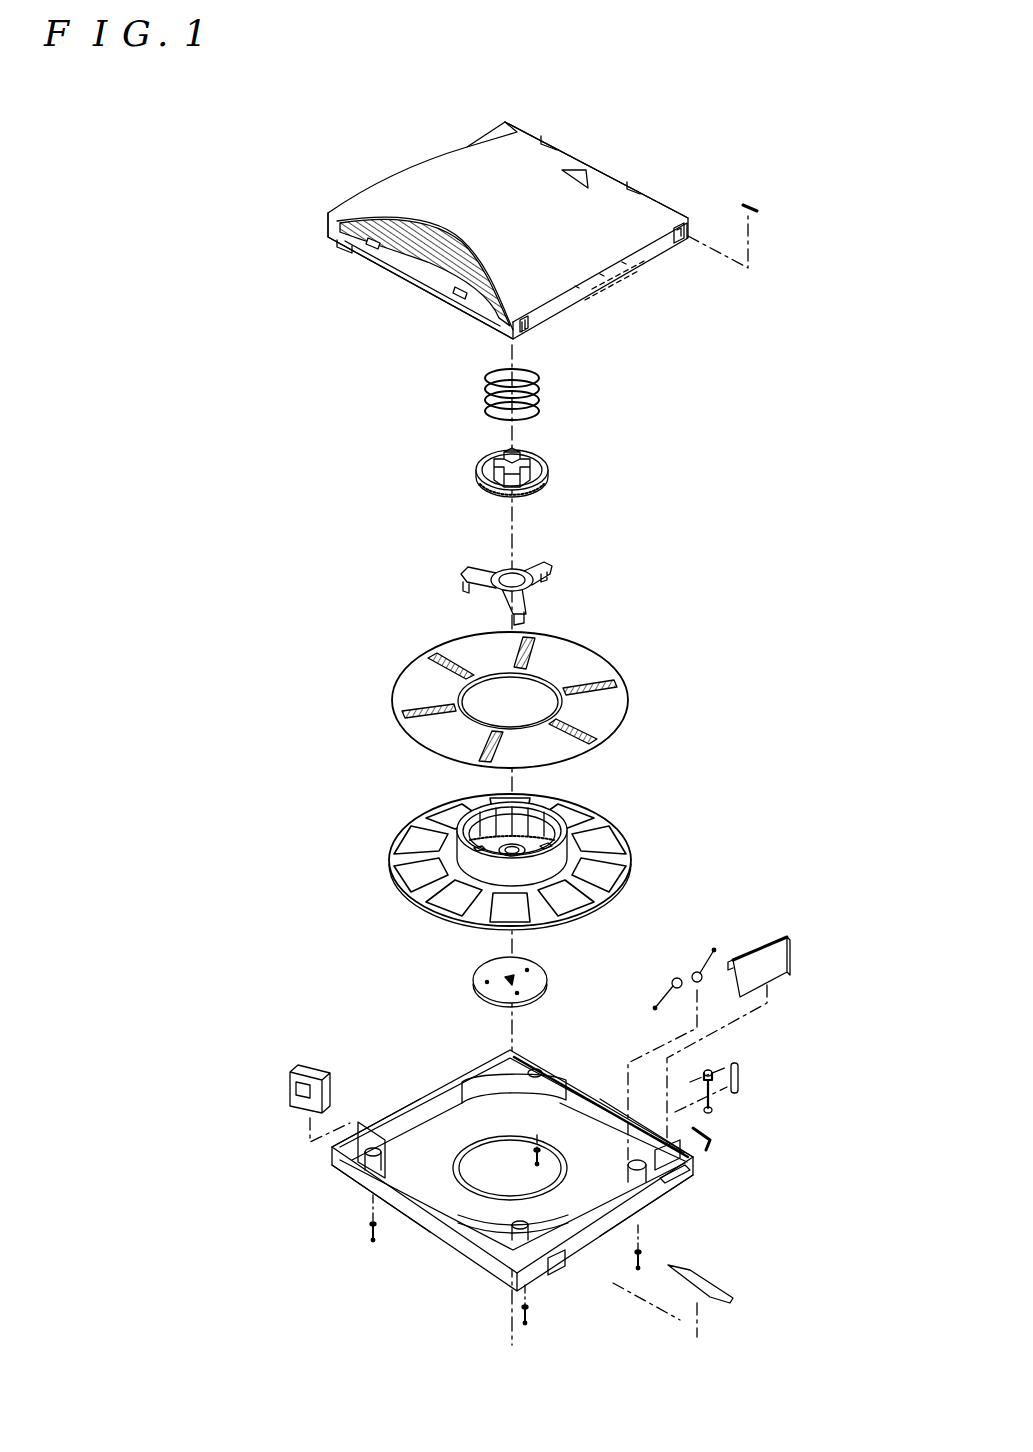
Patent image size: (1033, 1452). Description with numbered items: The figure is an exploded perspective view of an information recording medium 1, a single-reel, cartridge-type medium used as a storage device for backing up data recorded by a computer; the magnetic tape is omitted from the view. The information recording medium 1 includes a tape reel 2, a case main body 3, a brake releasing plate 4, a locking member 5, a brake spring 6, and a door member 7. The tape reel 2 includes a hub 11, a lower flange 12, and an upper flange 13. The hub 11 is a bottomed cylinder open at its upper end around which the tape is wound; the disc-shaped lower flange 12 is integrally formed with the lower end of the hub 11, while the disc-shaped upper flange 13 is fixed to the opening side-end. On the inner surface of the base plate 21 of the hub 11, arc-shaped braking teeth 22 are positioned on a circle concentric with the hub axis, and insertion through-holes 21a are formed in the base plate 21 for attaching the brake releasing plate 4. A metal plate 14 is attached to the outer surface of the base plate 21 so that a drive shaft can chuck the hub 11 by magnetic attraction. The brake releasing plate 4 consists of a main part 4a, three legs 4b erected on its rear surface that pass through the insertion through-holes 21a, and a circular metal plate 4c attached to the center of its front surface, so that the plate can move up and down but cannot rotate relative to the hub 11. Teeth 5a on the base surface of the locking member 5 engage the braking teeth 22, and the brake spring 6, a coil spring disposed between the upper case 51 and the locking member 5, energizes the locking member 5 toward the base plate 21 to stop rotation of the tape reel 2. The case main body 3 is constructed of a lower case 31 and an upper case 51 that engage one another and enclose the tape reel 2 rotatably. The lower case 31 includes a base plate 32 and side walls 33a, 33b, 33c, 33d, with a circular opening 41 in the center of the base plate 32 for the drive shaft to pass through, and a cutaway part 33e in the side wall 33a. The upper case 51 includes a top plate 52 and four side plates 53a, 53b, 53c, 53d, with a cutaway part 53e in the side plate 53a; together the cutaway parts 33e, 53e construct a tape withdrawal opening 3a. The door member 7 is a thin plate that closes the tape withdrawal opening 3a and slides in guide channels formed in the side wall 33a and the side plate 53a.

The information recording medium 1 is at (470, 117).
The tape reel 2 is at (369, 632).
The case main body 3 is at (358, 1082).
The tape withdrawal opening 3a is at (723, 730).
The brake releasing plate 4 is at (490, 565).
The main part 4a is at (550, 570).
The legs 4b is at (465, 585).
The circular metal plate 4c is at (513, 572).
The locking member 5 is at (547, 472).
The teeth 5a is at (520, 505).
The brake spring 6 is at (545, 390).
The door member 7 is at (753, 950).
The hub 11 is at (553, 863).
The lower flange 12 is at (423, 910).
The upper flange 13 is at (627, 692).
The metal plate 14 is at (550, 970).
The base plate 21 is at (468, 797).
The insertion through-holes 21a is at (547, 798).
The braking teeth 22 is at (458, 830).
The lower case 31 is at (472, 1065).
The base plate 32 is at (525, 1115).
The side wall 33a is at (585, 1227).
The side wall 33b is at (455, 1230).
The side wall 33c is at (407, 1102).
The side wall 33d is at (585, 1092).
The cutaway part 33e is at (677, 1193).
The opening 41 is at (497, 1167).
The upper case 51 is at (362, 202).
The top plate 52 is at (618, 210).
The side plate 53a is at (600, 290).
The side plate 53b is at (395, 267).
The side plate 53c is at (387, 177).
The side plate 53d is at (573, 152).
The cutaway part 53e is at (668, 250).